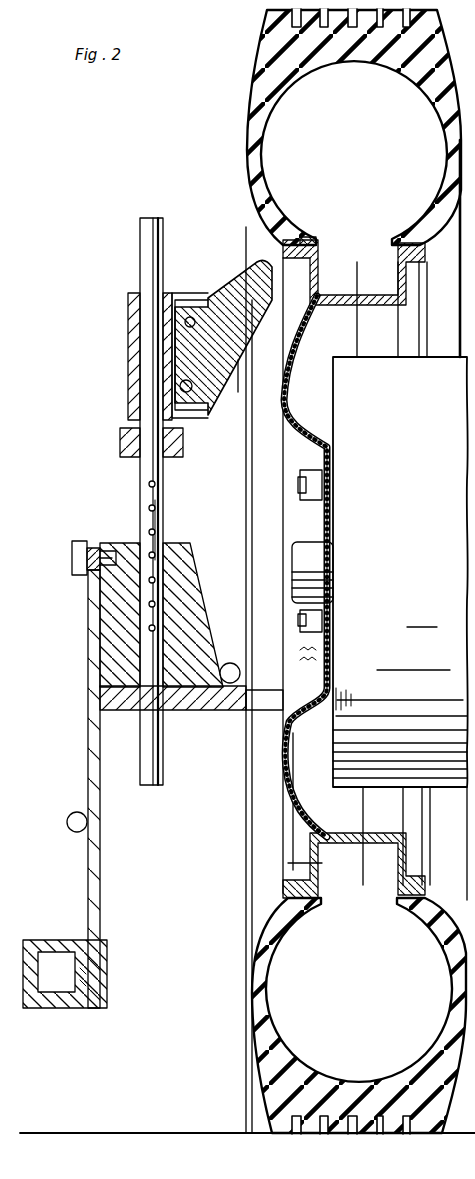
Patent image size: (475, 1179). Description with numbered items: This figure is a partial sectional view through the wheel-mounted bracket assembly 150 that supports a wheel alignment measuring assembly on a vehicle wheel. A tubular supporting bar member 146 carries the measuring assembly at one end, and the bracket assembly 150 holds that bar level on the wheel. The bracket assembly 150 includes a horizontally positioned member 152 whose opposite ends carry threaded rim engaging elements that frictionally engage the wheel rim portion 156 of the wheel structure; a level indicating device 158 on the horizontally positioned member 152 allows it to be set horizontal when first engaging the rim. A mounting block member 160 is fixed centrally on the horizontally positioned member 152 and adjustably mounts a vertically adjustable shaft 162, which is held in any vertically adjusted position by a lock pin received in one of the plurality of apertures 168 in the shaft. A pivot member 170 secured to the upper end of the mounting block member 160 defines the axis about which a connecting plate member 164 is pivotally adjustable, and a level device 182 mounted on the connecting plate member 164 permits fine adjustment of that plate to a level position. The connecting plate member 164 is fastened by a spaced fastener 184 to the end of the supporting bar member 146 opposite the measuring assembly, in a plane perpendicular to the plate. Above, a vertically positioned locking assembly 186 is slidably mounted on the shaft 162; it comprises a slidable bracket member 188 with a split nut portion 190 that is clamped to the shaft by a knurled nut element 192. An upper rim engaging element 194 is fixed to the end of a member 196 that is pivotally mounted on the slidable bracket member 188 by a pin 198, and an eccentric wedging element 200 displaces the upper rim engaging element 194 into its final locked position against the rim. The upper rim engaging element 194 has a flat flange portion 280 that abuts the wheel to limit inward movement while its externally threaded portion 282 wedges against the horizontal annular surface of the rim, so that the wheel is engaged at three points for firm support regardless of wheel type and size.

The tubular supporting bar member 146 is at (48, 1002).
The wheel supported bracket assembly 150 is at (122, 246).
The horizontally positioned member 152 is at (187, 697).
The wheel rim portion 156 is at (318, 856).
The level indicating device 158 is at (231, 662).
The mounting block member 160 is at (188, 600).
The vertically adjustable shaft 162 is at (148, 503).
The connecting plate member 164 is at (90, 748).
The apertures 168 is at (158, 530).
The pivot member 170 is at (72, 560).
The level device 182 is at (74, 830).
The spaced fastener 184 is at (108, 964).
The vertically positioned locking assembly 186 is at (208, 290).
The slidable bracket member 188 is at (128, 348).
The split nut portion 190 is at (183, 440).
The knurled nut element 192 is at (120, 442).
The upper rim engaging element 194 is at (283, 262).
The member 196 is at (228, 387).
The pin 198 is at (190, 316).
The eccentric wedging element 200 is at (188, 380).
The flat flange portion 280 is at (298, 255).
The externally threaded portion 282 is at (323, 285).